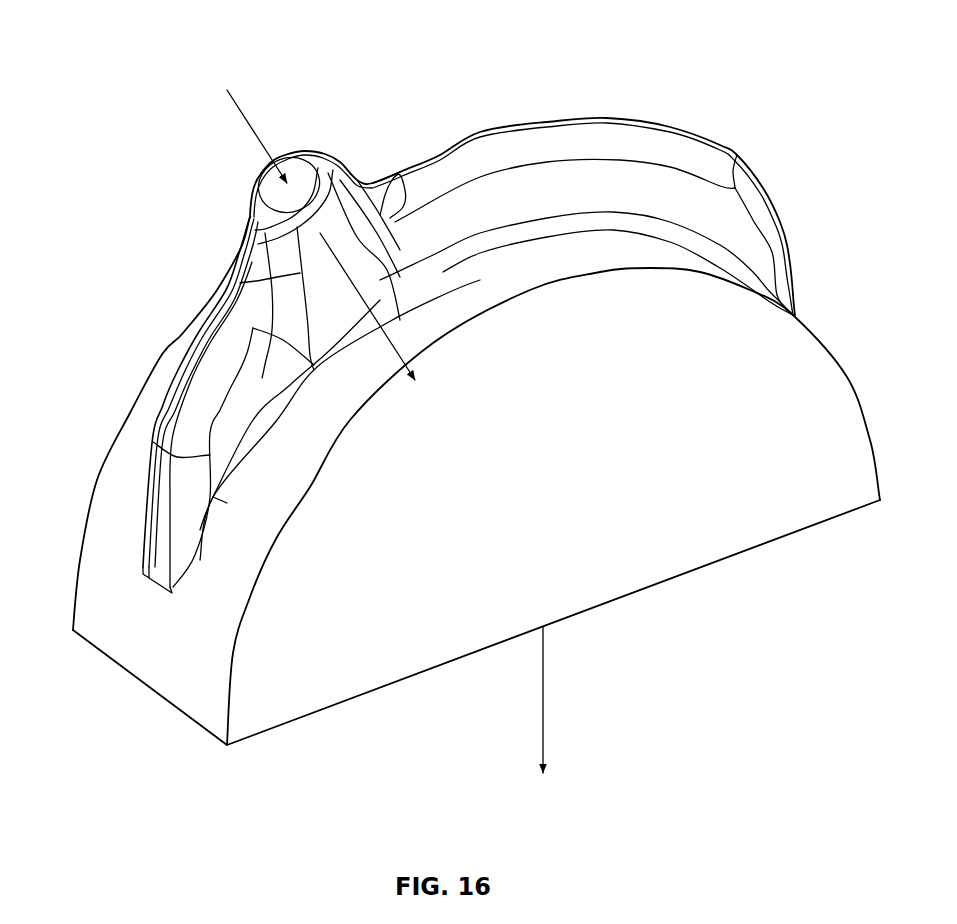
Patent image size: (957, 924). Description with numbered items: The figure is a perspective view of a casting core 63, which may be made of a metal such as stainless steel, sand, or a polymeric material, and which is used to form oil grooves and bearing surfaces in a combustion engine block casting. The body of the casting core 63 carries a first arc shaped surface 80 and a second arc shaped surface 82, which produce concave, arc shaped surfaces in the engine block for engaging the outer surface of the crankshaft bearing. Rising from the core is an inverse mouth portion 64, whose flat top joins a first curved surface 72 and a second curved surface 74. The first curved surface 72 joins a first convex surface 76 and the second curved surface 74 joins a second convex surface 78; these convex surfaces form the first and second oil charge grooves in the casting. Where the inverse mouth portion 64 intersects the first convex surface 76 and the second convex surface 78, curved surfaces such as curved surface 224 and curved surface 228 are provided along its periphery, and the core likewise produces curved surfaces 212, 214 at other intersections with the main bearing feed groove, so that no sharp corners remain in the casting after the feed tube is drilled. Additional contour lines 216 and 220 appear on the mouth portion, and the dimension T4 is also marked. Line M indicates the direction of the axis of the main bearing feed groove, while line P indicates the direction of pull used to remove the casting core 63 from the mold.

The casting core 63 is at (476, 481).
The inverse mouth portion 64 is at (283, 147).
The first curved surface 72 is at (373, 181).
The second curved surface 74 is at (248, 307).
The first convex surface 76 is at (607, 118).
The second convex surface 78 is at (182, 370).
The first arc shaped surface 80 is at (791, 257).
The second arc shaped surface 82 is at (157, 532).
The curved surface 212 is at (240, 255).
The curved surface 214 is at (246, 240).
The contour line 216 is at (380, 265).
The tooth shoulder 220 is at (353, 160).
The curved surface 224 is at (200, 323).
The curved surface 228 is at (417, 160).
The line M is at (240, 107).
The thickness T4 is at (317, 367).
The line P is at (543, 673).